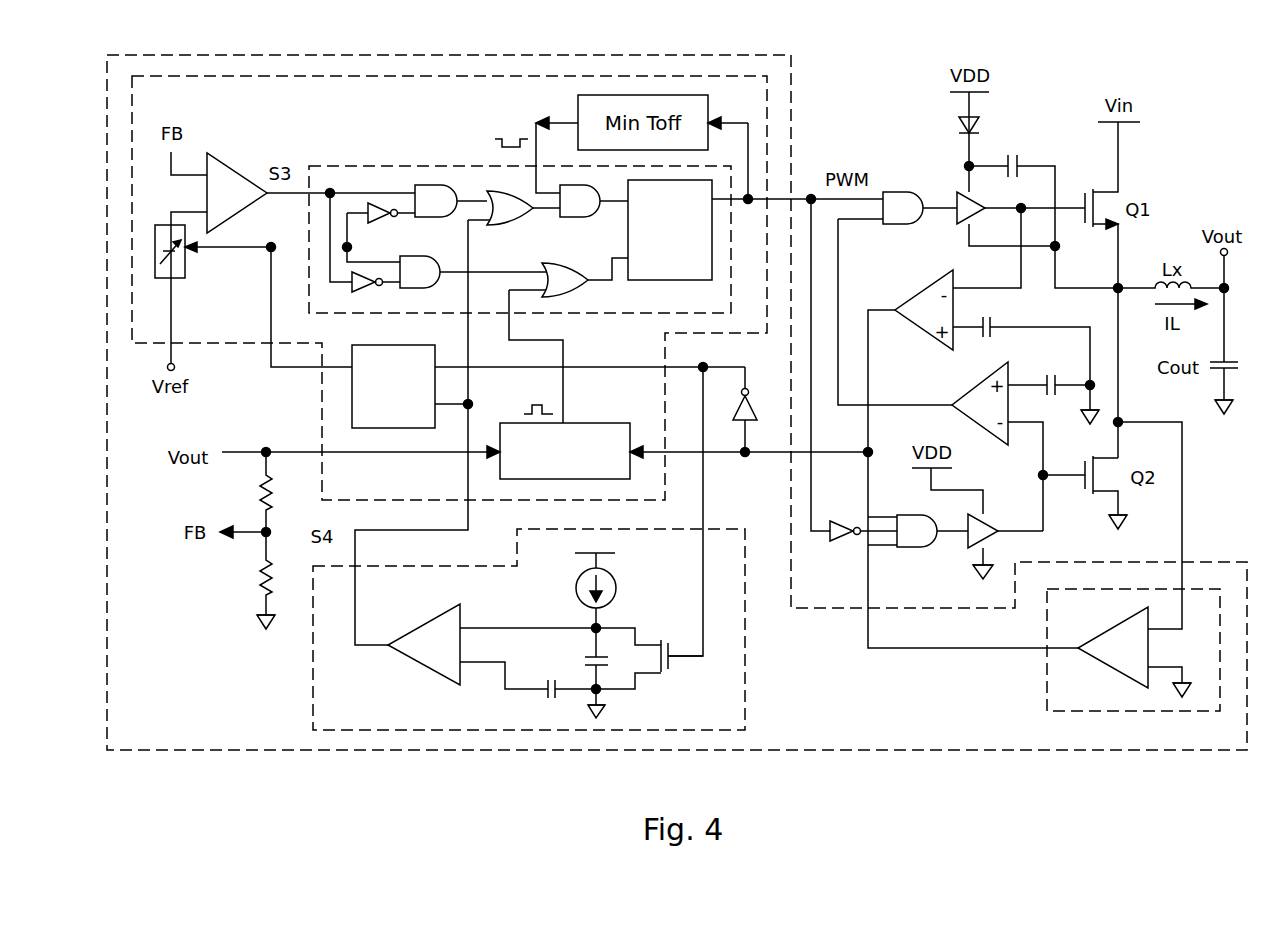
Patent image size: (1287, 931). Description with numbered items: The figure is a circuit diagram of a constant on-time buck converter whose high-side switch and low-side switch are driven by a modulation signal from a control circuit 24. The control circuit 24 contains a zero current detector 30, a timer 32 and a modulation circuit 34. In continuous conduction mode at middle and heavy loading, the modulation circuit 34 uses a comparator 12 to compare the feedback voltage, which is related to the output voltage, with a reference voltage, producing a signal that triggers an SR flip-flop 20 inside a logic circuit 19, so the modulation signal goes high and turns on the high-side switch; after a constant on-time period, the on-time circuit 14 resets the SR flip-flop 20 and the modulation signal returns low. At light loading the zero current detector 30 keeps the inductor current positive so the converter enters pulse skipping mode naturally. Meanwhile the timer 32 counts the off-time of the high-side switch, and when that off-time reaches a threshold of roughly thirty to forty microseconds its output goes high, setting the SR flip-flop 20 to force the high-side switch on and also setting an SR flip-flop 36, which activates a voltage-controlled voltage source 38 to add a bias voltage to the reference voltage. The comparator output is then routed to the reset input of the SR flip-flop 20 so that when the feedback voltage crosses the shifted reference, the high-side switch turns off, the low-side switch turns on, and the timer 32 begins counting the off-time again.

The comparator 12 is at (238, 172).
The on-time circuit 14 is at (595, 423).
The logic circuit 19 is at (428, 166).
The SR flip-flop 20 is at (668, 280).
The control circuit 24 is at (791, 130).
The zero current detector 30 is at (1047, 683).
The timer 32 is at (745, 665).
The modulation circuit 34 is at (222, 343).
The SR flip-flop 36 is at (352, 402).
The voltage-controlled voltage source 38 is at (190, 278).